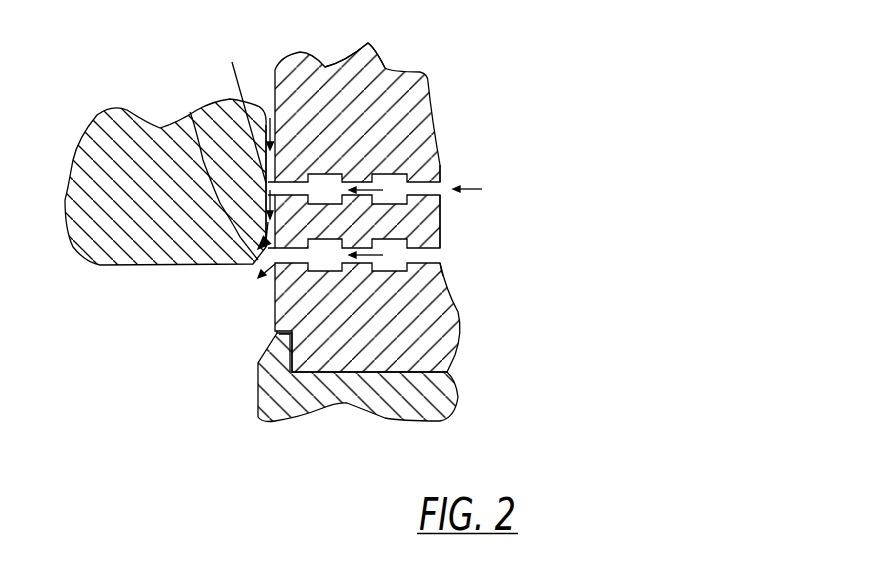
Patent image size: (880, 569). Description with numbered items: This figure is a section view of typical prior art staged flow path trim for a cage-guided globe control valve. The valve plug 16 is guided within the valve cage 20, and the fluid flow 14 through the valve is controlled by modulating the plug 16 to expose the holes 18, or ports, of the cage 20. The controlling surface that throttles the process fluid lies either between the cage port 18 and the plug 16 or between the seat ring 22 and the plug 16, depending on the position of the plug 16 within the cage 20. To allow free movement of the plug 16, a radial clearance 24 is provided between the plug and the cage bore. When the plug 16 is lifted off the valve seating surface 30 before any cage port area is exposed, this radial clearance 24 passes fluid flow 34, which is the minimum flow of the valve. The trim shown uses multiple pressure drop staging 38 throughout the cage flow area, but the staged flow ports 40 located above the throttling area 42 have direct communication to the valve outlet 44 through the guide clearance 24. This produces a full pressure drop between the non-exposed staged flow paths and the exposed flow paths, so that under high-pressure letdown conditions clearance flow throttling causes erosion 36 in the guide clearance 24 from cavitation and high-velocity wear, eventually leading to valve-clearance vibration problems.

The flow 14 is at (482, 190).
The valve plug 16 is at (112, 107).
The holes 18 is at (272, 268).
The valve cage 20 is at (430, 93).
The seat ring 22 is at (295, 421).
The radial clearance 24 is at (265, 91).
The valve seating surface 30 is at (260, 362).
The fluid flow 34 is at (232, 62).
The erosion 36 is at (327, 63).
The pressure drop staging 38 is at (446, 192).
The staged flow ports 40 is at (432, 185).
The throttling area 42 is at (197, 118).
The valve outlet 44 is at (144, 422).